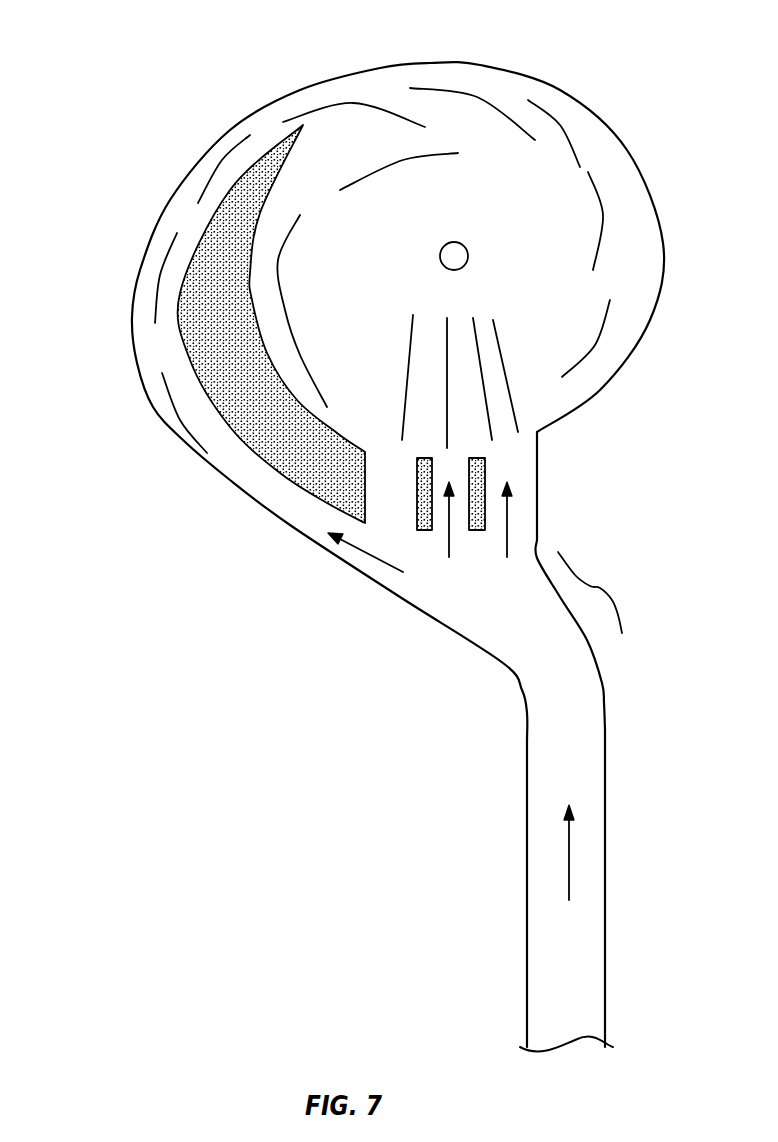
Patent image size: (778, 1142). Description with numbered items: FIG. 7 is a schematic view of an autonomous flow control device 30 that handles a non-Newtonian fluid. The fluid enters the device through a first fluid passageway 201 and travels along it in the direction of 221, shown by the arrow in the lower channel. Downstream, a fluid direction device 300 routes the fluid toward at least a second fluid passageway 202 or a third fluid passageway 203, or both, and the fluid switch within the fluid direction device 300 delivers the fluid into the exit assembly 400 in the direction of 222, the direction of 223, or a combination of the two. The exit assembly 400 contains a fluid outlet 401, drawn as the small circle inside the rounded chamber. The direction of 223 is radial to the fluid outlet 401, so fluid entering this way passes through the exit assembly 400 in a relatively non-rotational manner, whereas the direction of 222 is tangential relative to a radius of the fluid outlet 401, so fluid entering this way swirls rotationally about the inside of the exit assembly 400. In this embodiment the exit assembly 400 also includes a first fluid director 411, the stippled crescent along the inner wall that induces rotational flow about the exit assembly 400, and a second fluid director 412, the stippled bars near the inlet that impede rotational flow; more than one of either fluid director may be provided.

The autonomous flow control device 30 is at (113, 53).
The exit assembly 400 is at (554, 58).
The fluid outlet 401 is at (458, 242).
The second fluid passageway 202 is at (200, 430).
The third fluid passageway 203 is at (518, 460).
The first fluid director 411 is at (280, 457).
The second fluid director 412 is at (417, 473).
The first fluid passageway 201 is at (605, 852).
The flow direction in first fluid passageway 221 is at (565, 860).
The tangential flow direction 222 is at (370, 553).
The radial flow direction 223 is at (441, 540).
The fluid direction device 300 is at (600, 588).